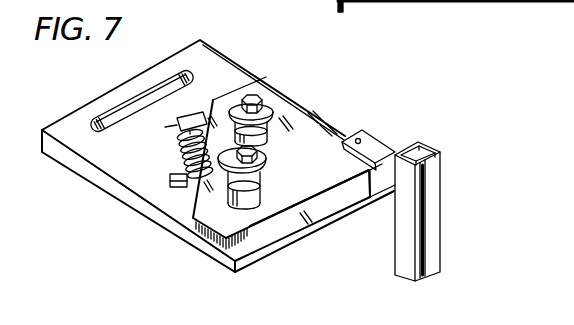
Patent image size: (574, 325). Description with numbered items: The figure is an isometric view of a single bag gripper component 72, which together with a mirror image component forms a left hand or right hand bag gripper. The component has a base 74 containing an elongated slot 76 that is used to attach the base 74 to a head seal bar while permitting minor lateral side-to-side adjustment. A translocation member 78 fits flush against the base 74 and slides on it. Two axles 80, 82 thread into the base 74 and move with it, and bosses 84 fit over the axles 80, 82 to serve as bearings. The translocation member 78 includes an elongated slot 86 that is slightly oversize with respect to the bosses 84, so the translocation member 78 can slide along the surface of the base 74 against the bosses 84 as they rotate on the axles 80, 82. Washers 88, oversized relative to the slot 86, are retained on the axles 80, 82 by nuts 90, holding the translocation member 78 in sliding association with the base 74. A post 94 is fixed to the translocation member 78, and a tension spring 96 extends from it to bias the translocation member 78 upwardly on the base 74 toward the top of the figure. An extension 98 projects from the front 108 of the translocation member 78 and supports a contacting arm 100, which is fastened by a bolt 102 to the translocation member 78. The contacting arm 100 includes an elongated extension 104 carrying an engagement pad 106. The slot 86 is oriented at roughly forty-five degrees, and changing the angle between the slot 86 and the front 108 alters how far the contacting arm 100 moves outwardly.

The bag gripper component 72 is at (100, 93).
The base 74 is at (142, 158).
The elongated slot 76 is at (192, 66).
The translocation member 78 is at (341, 181).
The axle 80 is at (262, 71).
The axle 82 is at (305, 103).
The bosses 84 is at (262, 131).
The elongated slot 86 is at (247, 199).
The washers 88 is at (246, 95).
The nuts 90 is at (259, 101).
The post 94 is at (152, 213).
The tension spring 96 is at (170, 177).
The extension 98 is at (384, 190).
The contacting arm 100 is at (396, 126).
The bolt 102 is at (361, 137).
The elongated extension 104 is at (402, 257).
The engagement pad 106 is at (437, 228).
The front of the translocation member 108 is at (290, 232).